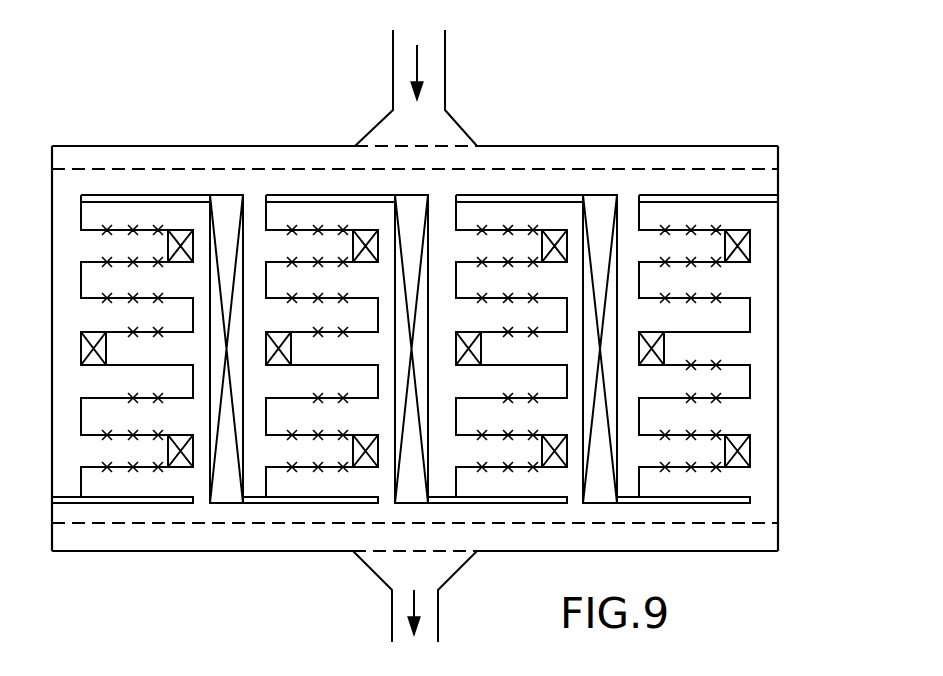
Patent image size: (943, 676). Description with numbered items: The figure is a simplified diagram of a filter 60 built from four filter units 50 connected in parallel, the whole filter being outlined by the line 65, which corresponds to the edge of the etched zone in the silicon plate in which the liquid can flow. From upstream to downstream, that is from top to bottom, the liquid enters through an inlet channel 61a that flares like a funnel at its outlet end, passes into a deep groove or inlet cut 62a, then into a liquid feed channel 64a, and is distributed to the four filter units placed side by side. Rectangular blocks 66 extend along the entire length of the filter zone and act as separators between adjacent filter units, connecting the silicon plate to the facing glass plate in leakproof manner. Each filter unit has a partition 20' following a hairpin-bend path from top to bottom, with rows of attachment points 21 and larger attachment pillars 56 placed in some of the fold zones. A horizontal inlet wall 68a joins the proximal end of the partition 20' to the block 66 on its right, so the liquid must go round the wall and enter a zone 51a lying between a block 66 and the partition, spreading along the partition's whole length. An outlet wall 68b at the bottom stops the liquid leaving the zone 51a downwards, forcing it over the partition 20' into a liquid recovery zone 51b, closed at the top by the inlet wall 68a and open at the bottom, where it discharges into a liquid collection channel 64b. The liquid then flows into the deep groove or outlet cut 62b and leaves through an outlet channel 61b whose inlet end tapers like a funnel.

The filter unit 50 is at (717, 141).
The zone 51a is at (627, 218).
The liquid recovery zone 51b is at (768, 238).
The attachment pillar 56 is at (362, 480).
The filter 60 is at (793, 313).
The inlet channel 61a is at (438, 70).
The outlet channel 61b is at (437, 618).
The deep groove or inlet cut 62a is at (219, 157).
The deep groove or outlet cut 62b is at (227, 538).
The liquid feed channel 64a is at (125, 182).
The liquid collection channel 64b is at (130, 517).
The block 66 is at (605, 198).
The inlet wall 68a is at (535, 197).
The outlet wall 68b is at (535, 500).
The partition 20' is at (731, 349).
The attachment points 21 is at (718, 430).
The line 65 is at (762, 556).